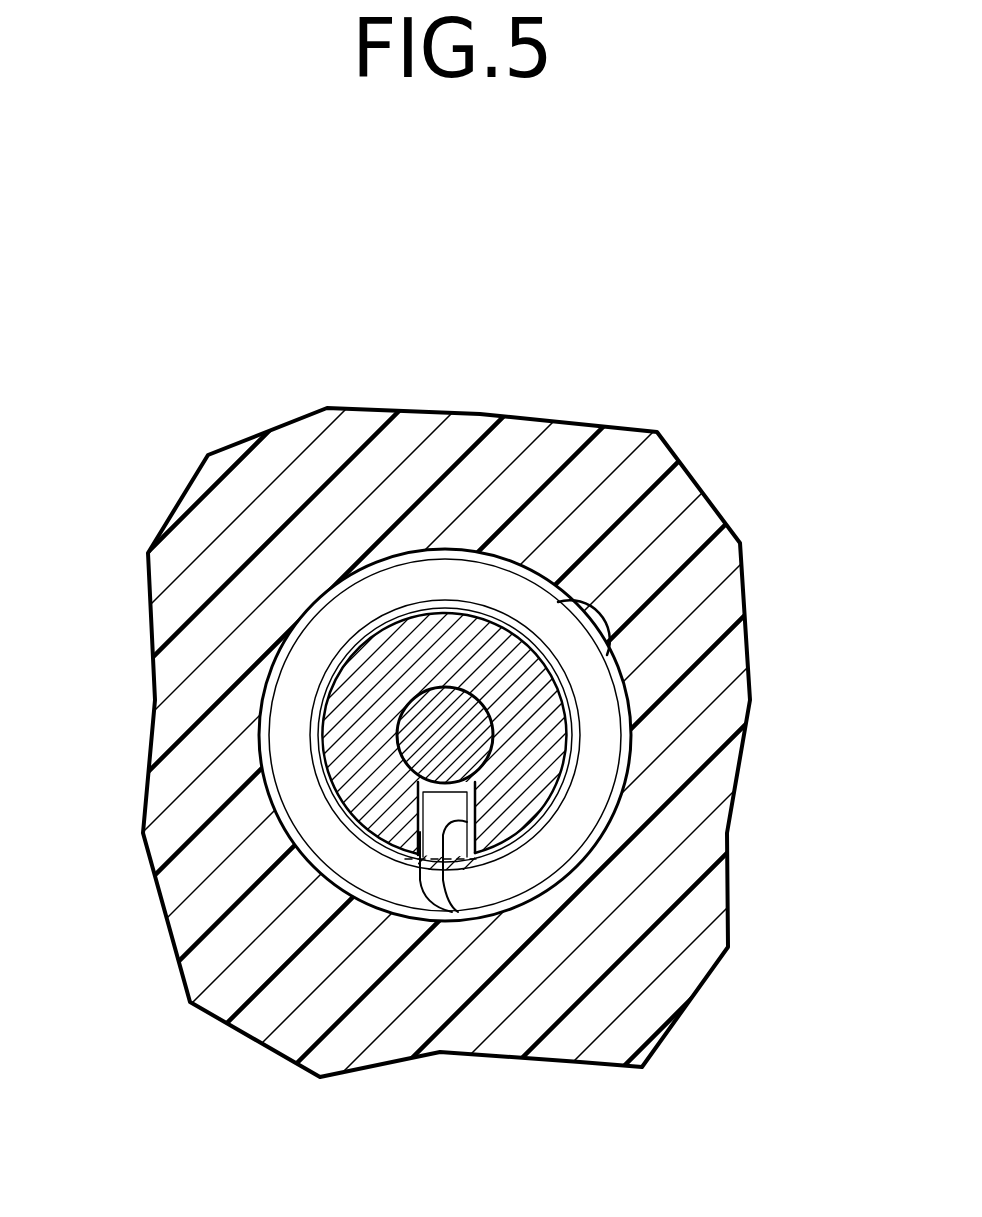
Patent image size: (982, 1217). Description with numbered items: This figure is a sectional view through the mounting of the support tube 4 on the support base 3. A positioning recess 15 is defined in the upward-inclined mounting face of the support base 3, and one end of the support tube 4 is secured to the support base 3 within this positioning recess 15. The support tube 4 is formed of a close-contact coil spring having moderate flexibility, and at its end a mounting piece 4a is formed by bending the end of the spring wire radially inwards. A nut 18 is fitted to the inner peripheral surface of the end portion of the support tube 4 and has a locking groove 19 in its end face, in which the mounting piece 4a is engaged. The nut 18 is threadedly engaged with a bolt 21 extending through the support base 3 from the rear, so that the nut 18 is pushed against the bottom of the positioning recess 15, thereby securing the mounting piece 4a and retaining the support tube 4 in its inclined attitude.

The support base 3 is at (547, 453).
The support tube 4 is at (593, 740).
The mounting piece 4a is at (438, 818).
The positioning recess 15 is at (583, 653).
The nut 18 is at (343, 718).
The locking groove 19 is at (455, 912).
The bolt 21 is at (443, 707).